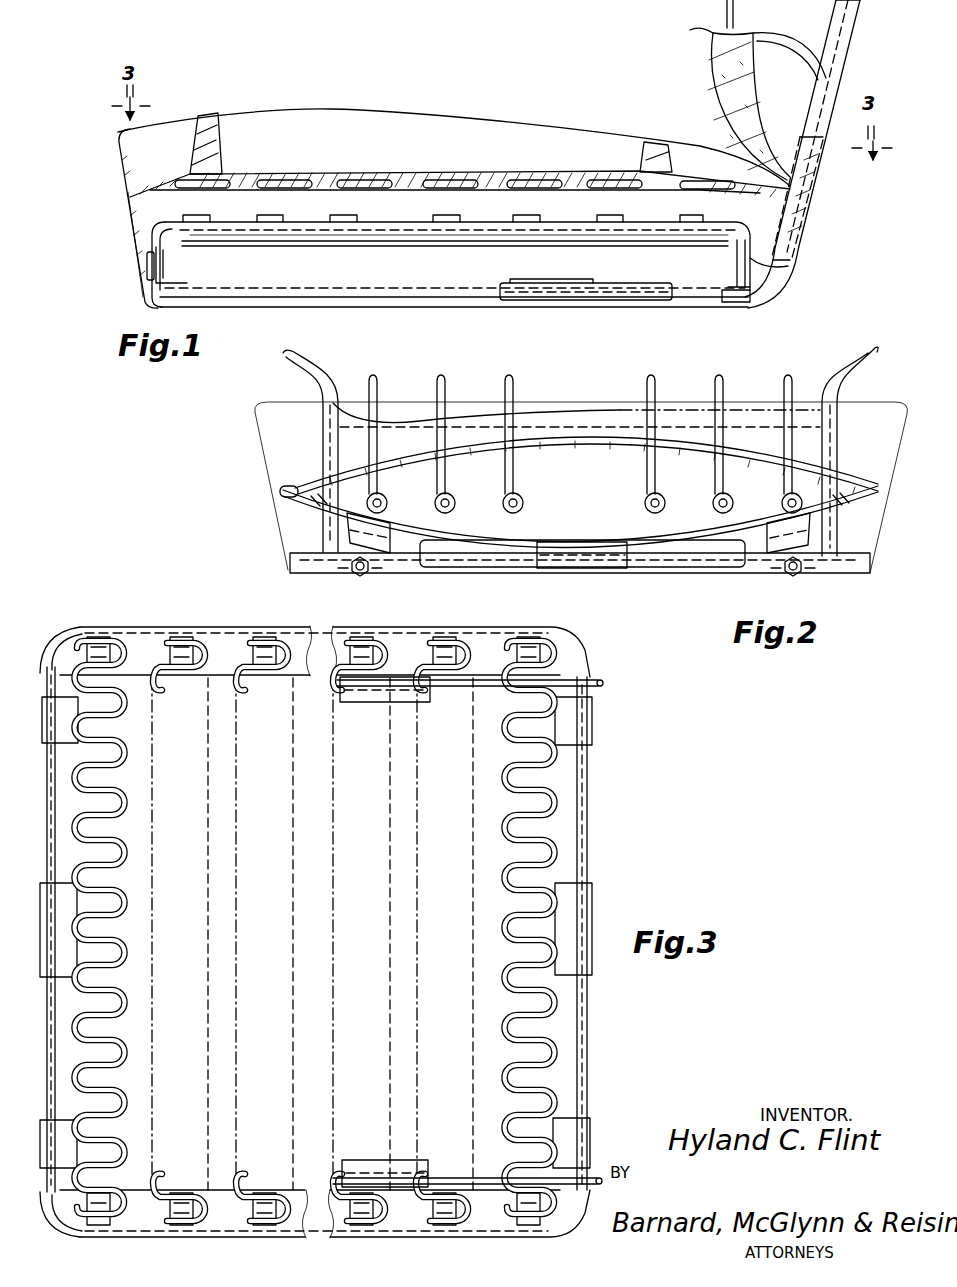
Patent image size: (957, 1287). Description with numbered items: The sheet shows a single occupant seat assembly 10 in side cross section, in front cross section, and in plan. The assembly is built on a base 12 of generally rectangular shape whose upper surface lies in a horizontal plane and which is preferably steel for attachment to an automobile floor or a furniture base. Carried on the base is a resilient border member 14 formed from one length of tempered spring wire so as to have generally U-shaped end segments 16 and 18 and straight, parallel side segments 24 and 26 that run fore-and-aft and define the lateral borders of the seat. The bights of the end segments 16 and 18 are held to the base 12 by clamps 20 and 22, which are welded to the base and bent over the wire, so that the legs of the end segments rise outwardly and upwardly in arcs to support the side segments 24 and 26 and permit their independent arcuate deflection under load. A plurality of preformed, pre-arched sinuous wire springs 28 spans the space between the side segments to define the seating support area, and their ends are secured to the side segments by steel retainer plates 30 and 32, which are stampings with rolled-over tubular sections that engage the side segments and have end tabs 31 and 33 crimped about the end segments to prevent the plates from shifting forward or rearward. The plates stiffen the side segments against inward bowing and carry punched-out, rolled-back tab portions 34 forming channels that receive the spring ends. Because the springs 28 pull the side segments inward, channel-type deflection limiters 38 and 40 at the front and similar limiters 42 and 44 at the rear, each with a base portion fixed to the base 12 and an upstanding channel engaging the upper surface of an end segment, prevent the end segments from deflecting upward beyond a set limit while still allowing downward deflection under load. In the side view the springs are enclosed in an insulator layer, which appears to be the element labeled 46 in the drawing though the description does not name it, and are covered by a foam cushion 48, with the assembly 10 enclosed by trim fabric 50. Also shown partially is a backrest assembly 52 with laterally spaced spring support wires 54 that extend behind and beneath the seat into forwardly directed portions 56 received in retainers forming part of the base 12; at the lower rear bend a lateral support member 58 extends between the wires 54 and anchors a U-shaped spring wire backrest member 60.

In FIG. 1, the single occupant seat assembly 10 is at (543, 110).
In FIG. 2, the single occupant seat assembly 10 is at (561, 398).
In FIG. 3, the single occupant seat assembly 10 is at (595, 800).
In FIG. 1, the base 12 is at (458, 287).
In FIG. 2, the base 12 is at (667, 567).
In FIG. 1, the resilient border member 14 is at (146, 229).
In FIG. 2, the resilient border member 14 is at (296, 505).
In FIG. 3, the resilient border member 14 is at (588, 847).
In FIG. 1, the end segment 16 is at (166, 265).
In FIG. 2, the end segment 16 is at (423, 560).
In FIG. 3, the end segment 16 is at (57, 830).
In FIG. 1, the end segment 18 is at (738, 263).
In FIG. 3, the end segment 18 is at (588, 1028).
In FIG. 1, the clamp 20 is at (146, 300).
In FIG. 2, the clamp 20 is at (568, 563).
In FIG. 3, the clamp 20 is at (77, 907).
In FIG. 3, the clamp 22 is at (592, 902).
In FIG. 3, the side segment 24 is at (148, 627).
In FIG. 1, the side segment 26 is at (550, 231).
In FIG. 3, the side segment 26 is at (353, 1233).
In FIG. 1, the sinuous wire spring 28 is at (434, 182).
In FIG. 2, the sinuous wire spring 28 is at (545, 446).
In FIG. 3, the sinuous wire spring 28 is at (517, 859).
In FIG. 2, the retainer plate 30 is at (280, 487).
In FIG. 3, the retainer plate 30 is at (130, 625).
In FIG. 2, the end tab 31 is at (315, 510).
In FIG. 3, the end tab 31 is at (43, 657).
In FIG. 1, the retainer plate 32 is at (290, 233).
In FIG. 2, the retainer plate 32 is at (880, 487).
In FIG. 3, the retainer plate 32 is at (500, 1235).
In FIG. 2, the end tab 33 is at (837, 503).
In FIG. 3, the end tab 33 is at (70, 1227).
In FIG. 2, the tab portion 34 is at (298, 483).
In FIG. 3, the tab portion 34 is at (277, 630).
In FIG. 2, the channel-type deflection limiter 38 is at (380, 517).
In FIG. 3, the channel-type deflection limiter 38 is at (110, 725).
In FIG. 1, the channel-type deflection limiter 40 is at (147, 263).
In FIG. 2, the channel-type deflection limiter 40 is at (773, 520).
In FIG. 3, the channel-type deflection limiter 40 is at (90, 1133).
In FIG. 3, the channel-type limiter 42 is at (592, 717).
In FIG. 1, the channel-type limiter 44 is at (760, 262).
In FIG. 3, the channel-type limiter 44 is at (590, 1125).
In FIG. 1, the cushion pad 46 is at (507, 182).
In FIG. 1, the foam cushion 48 is at (216, 118).
In FIG. 1, the trim fabric 50 is at (367, 112).
In FIG. 1, the backrest assembly 52 is at (712, 36).
In FIG. 1, the spring support wire 54 is at (818, 108).
In FIG. 2, the spring support wire 54 is at (302, 372).
In FIG. 3, the spring support wire 54 is at (602, 683).
In FIG. 1, the forwardly directed portion 56 is at (697, 300).
In FIG. 2, the forwardly directed portion 56 is at (358, 575).
In FIG. 3, the forwardly directed portion 56 is at (462, 688).
In FIG. 1, the lateral support member 58 is at (797, 207).
In FIG. 2, the lateral support member 58 is at (458, 403).
In FIG. 2, the U-shaped spring wire backrest member 60 is at (375, 400).